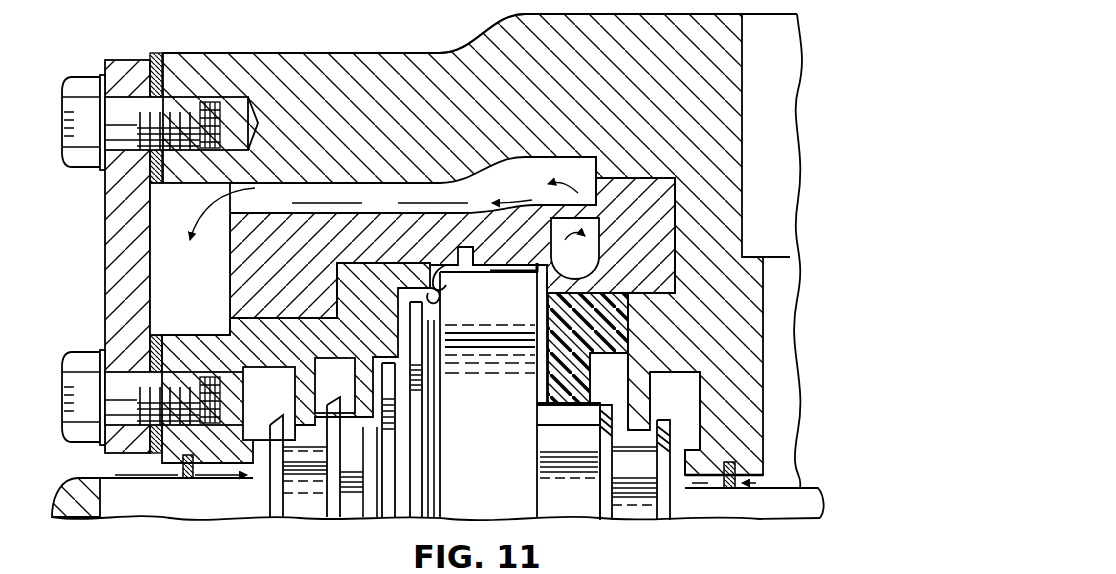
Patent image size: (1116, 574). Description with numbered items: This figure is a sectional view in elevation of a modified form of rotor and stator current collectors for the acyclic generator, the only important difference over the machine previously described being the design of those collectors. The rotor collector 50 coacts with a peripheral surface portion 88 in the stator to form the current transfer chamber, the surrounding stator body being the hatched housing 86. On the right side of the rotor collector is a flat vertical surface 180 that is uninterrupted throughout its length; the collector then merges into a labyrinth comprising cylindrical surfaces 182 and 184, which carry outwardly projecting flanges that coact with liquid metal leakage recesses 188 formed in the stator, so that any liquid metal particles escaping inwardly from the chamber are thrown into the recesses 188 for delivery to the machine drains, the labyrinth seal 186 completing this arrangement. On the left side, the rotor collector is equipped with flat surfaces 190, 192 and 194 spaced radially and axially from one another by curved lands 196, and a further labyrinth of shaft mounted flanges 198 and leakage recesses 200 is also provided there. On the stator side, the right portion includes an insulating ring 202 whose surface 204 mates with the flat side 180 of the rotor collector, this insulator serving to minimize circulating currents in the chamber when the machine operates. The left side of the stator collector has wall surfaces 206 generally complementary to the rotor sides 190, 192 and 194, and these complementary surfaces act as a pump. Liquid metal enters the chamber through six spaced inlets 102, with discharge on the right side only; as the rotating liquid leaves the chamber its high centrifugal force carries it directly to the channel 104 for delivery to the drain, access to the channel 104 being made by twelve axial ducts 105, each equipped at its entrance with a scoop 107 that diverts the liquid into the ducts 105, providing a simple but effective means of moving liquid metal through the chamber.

The collector 50 is at (493, 407).
The housing 86 is at (334, 51).
The peripheral surface portion 88 is at (429, 53).
The inlets 102 is at (450, 268).
The channel 104 is at (198, 280).
The axial ducts 105 is at (381, 198).
The scoop 107 is at (560, 181).
The flat vertical surface 180 is at (535, 415).
The cylindrical surface 182 is at (558, 418).
The cylindrical surface 184 is at (649, 448).
The labyrinth seal 186 is at (606, 493).
The liquid metal leakage recesses 188 is at (626, 379).
The flat surface 190 is at (440, 291).
The flat surface 192 is at (408, 341).
The flat surface 194 is at (383, 451).
The curved lands 196 is at (380, 479).
The shaft mounted flanges 198 is at (327, 513).
The leakage recesses 200 is at (281, 399).
The insulating ring 202 is at (549, 308).
The surface 204 is at (548, 385).
The wall surfaces 206 is at (406, 299).